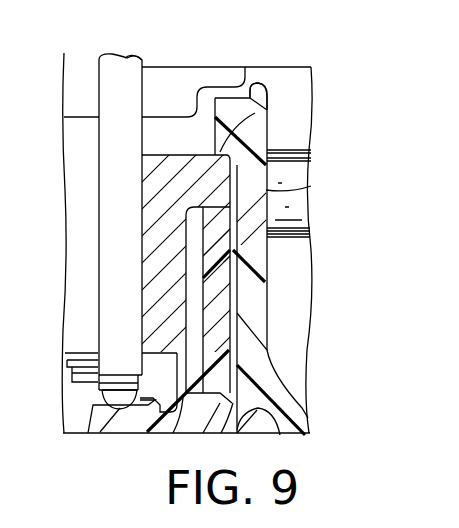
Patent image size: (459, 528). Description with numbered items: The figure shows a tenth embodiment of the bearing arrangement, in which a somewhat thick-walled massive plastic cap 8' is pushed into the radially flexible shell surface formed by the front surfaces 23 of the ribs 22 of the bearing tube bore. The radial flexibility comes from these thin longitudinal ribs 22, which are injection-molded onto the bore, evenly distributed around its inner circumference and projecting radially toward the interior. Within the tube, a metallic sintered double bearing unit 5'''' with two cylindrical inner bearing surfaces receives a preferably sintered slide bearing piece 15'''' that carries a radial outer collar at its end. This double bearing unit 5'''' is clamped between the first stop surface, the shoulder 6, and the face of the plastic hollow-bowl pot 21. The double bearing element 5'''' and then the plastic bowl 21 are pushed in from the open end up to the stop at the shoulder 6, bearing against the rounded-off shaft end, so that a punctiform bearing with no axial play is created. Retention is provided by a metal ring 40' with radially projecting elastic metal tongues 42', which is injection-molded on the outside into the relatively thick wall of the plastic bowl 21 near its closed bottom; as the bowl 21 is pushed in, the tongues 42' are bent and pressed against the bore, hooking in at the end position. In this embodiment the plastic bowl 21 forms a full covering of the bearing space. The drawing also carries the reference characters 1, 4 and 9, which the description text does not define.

The piston rod 1 is at (142, 92).
The support ring 4 is at (302, 428).
The double bearing unit 5'''' is at (265, 216).
The shoulder 6 is at (263, 105).
The plastic cap 8' is at (158, 405).
The housing 9 is at (280, 173).
The slide bearing piece 15'''' is at (289, 385).
The plastic hollow-bowl pot 21 is at (223, 247).
The ribs 22 is at (235, 277).
The front surfaces 23 is at (227, 323).
The metal ring 40' is at (218, 335).
The metal tongues 42' is at (275, 437).